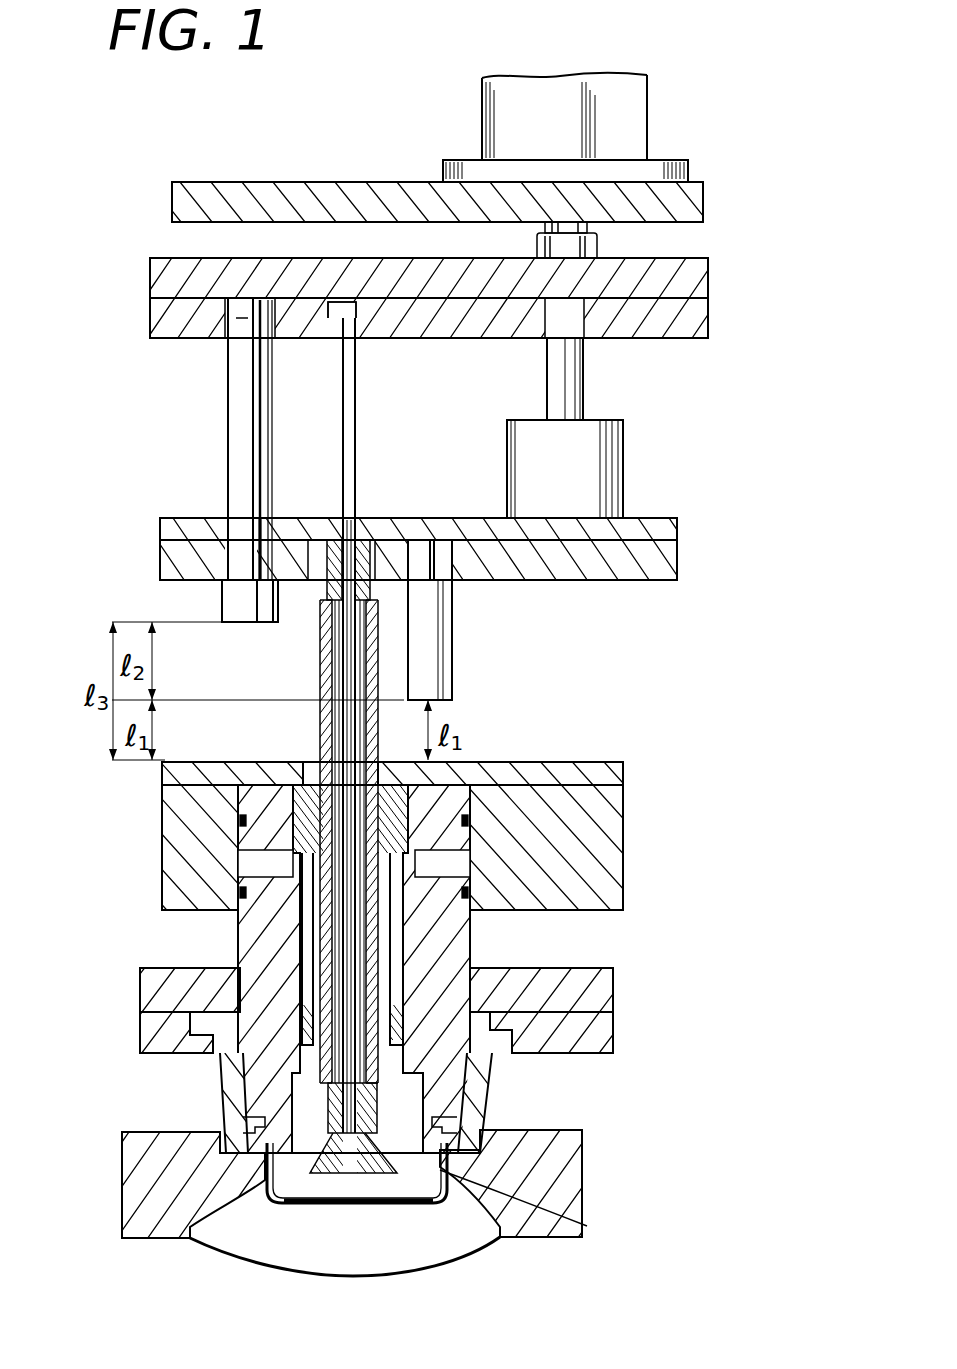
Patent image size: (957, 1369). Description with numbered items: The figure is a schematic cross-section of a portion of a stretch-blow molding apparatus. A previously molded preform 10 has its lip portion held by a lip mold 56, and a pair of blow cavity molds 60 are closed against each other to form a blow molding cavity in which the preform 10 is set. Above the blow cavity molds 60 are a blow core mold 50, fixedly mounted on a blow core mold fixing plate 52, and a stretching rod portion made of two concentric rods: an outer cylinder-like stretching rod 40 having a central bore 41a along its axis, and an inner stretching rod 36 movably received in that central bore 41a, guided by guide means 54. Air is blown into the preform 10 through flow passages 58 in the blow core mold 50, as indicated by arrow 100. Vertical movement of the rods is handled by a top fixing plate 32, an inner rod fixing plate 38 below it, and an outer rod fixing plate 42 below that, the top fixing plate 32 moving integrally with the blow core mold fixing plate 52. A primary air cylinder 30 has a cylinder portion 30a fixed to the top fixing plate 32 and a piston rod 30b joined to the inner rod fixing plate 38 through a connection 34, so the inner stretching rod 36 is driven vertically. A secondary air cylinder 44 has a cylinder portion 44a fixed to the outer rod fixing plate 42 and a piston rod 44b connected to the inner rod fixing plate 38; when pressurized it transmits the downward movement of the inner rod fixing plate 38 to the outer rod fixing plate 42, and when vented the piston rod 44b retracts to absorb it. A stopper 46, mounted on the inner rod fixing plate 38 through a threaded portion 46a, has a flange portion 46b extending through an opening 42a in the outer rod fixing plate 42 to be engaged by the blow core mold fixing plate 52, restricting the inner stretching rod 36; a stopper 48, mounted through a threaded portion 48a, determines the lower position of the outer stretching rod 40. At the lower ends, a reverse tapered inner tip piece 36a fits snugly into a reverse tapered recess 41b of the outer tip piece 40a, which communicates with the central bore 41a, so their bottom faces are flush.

The preform 10 is at (568, 1222).
The primary air cylinder 30 is at (500, 84).
The cylinder portion 30a is at (640, 131).
The piston rod 30b is at (592, 230).
The top fixing plate 32 is at (705, 204).
The connection 34 is at (537, 247).
The inner stretching rod 36 is at (354, 380).
The inner tip piece 36a is at (383, 1198).
The inner rod fixing plate 38 is at (136, 265).
The outer stretching rod 40 is at (322, 743).
The outer tip piece 40a is at (283, 1200).
The central bore 41a is at (338, 683).
The reverse tapered recess 41b is at (326, 1176).
The outer rod fixing plate 42 is at (152, 522).
The opening 42a is at (258, 540).
The secondary air cylinder 44 is at (507, 467).
The cylinder portion 44a is at (625, 471).
The piston rod 44b is at (585, 382).
The stopper 46 is at (232, 459).
The threaded portion 46a is at (241, 320).
The flange portion 46b is at (240, 605).
The stopper 48 is at (452, 673).
The threaded portion 48a is at (455, 578).
The blow core mold 50 is at (435, 951).
The blow core mold fixing plate 52 is at (175, 821).
The guide means 54 is at (330, 582).
The lip mold 56 is at (222, 1075).
The flow passages 58 is at (268, 866).
The blow cavity molds 60 is at (145, 1186).
The arrow 100 is at (320, 1077).